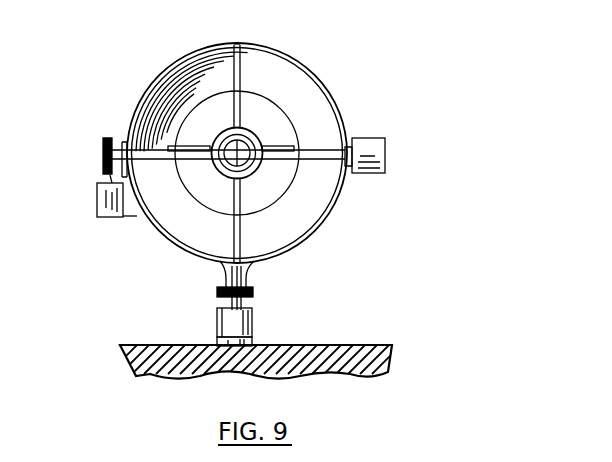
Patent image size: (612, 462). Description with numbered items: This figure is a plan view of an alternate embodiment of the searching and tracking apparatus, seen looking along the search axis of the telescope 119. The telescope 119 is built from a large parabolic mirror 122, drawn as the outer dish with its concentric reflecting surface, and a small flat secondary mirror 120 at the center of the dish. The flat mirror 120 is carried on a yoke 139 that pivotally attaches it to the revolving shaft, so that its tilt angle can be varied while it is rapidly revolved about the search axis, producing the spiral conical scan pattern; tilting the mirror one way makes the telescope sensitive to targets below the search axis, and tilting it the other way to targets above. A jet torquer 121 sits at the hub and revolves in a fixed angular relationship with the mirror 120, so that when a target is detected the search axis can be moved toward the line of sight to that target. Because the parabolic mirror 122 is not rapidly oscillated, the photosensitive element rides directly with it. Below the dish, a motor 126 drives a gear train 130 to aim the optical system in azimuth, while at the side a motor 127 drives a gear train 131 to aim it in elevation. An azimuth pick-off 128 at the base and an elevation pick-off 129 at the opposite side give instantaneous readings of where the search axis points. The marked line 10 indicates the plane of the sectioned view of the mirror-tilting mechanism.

The cross bar 10 is at (217, 103).
The telescope 119 is at (316, 124).
The flat secondary mirror 120 is at (272, 190).
The jet torquer 121 is at (240, 150).
The parabolic mirror 122 is at (302, 84).
The motor 126 is at (253, 318).
The motor 127 is at (110, 215).
The azimuth pick-off 128 is at (240, 339).
The elevation pick-off 129 is at (380, 144).
The gear train 130 is at (254, 291).
The gear train 131 is at (107, 137).
The yoke 139 is at (198, 160).